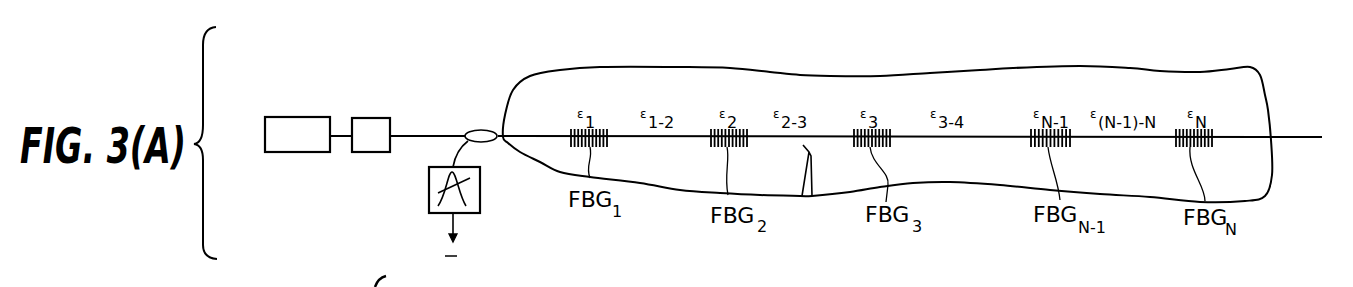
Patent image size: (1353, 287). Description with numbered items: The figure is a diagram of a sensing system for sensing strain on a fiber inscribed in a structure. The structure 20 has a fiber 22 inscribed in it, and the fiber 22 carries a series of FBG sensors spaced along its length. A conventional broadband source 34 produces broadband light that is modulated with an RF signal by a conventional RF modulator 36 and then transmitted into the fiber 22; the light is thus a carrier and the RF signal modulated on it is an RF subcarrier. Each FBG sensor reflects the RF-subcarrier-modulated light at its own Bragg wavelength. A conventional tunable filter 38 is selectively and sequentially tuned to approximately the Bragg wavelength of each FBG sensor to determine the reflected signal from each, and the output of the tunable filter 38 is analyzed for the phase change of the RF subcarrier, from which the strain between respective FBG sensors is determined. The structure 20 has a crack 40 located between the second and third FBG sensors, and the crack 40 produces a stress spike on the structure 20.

The structure 20 is at (1013, 100).
The fiber 22 is at (1290, 137).
The broadband source 34 is at (283, 117).
The RF modulator 36 is at (367, 122).
The tunable filter 38 is at (480, 196).
The crack 40 is at (803, 198).